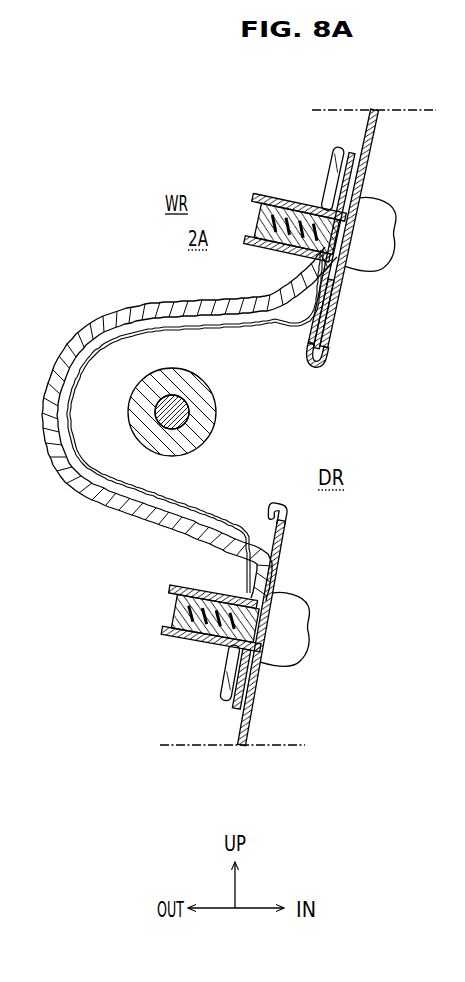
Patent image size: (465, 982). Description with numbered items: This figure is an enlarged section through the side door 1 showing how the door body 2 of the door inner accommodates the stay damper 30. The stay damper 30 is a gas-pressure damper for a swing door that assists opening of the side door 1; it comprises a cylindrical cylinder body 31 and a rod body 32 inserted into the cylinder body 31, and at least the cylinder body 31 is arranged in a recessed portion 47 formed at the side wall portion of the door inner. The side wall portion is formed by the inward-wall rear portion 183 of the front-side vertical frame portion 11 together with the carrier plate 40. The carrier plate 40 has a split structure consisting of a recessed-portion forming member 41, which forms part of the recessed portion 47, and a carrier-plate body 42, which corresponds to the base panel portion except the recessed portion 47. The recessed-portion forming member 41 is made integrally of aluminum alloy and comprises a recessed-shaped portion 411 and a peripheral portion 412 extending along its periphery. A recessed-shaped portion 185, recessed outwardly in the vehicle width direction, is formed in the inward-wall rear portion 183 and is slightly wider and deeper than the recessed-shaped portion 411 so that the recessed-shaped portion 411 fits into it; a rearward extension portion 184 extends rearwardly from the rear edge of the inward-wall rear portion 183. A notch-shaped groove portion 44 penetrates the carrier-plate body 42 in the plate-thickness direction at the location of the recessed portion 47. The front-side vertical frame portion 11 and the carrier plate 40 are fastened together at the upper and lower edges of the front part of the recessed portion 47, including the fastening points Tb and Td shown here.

The side door 1 is at (343, 427).
The door body 2 is at (389, 164).
The front-side vertical frame portion 11 is at (107, 306).
The stay damper 30 is at (196, 425).
The cylinder body 31 is at (207, 429).
The rod body 32 is at (191, 404).
The carrier plate 40 is at (229, 377).
The recessed-portion forming member 41 is at (211, 341).
The recessed-shaped portion 411 is at (88, 409).
The peripheral portion 412 is at (341, 298).
The carrier-plate body 42 is at (328, 348).
The notch-shaped groove portion 44 is at (305, 372).
The recessed portion 47 is at (122, 449).
The inward-wall rear portion 183 is at (179, 393).
The rearward extension portion 184 is at (173, 533).
The recessed-shaped portion 185 is at (76, 457).
The fastening point Tb is at (392, 238).
The fastening point Td is at (315, 611).